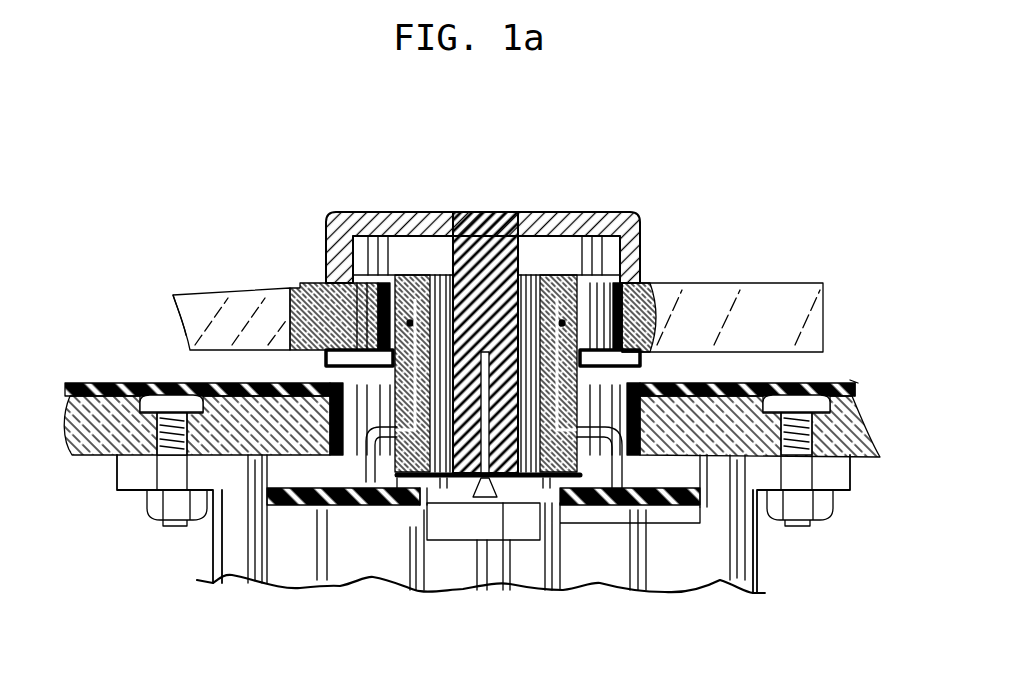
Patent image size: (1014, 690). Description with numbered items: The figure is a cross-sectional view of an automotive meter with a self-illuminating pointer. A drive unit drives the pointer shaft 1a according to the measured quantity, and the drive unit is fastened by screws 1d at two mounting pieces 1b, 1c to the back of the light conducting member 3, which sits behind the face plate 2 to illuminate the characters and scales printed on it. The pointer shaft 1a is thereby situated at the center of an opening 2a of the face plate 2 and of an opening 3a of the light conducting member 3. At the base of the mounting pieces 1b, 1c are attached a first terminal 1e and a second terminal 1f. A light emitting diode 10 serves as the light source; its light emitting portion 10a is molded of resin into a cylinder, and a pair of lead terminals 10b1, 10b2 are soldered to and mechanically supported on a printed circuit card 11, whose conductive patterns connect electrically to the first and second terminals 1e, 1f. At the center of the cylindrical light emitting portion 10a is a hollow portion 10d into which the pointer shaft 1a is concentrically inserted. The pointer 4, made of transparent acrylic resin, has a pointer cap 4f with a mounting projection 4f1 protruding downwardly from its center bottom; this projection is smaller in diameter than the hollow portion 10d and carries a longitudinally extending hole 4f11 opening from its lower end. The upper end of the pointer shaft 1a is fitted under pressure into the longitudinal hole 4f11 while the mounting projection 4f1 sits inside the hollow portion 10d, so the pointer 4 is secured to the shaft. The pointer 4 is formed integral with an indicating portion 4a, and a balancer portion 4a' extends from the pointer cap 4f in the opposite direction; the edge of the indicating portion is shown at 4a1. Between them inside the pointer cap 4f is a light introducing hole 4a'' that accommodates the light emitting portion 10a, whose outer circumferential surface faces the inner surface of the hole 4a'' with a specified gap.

The pointer shaft 1a is at (442, 487).
The mounting piece 1b is at (208, 537).
The mounting piece 1c is at (737, 527).
The screws 1d is at (147, 457).
The first terminal 1e is at (265, 535).
The second terminal 1f is at (712, 555).
The face plate 2 is at (112, 383).
The opening 2a is at (350, 385).
The light conducting member 3 is at (77, 427).
The opening 3a is at (315, 512).
The pointer 4 is at (425, 208).
The indicating portion 4a is at (231, 296).
The disc edge 4a1 is at (203, 352).
The balancer portion 4a' is at (701, 302).
The light introducing hole 4a'' is at (358, 268).
The pointer cap 4f is at (600, 212).
The mounting projection 4f1 is at (502, 233).
The longitudinally extending hole 4f11 is at (587, 393).
The light emitting diode 10 is at (545, 260).
The light emitting portion 10a is at (573, 283).
The lead terminal 10b1 is at (328, 525).
The lead terminal 10b2 is at (607, 517).
The hollow portion 10d is at (405, 507).
The printed circuit card 11 is at (667, 545).